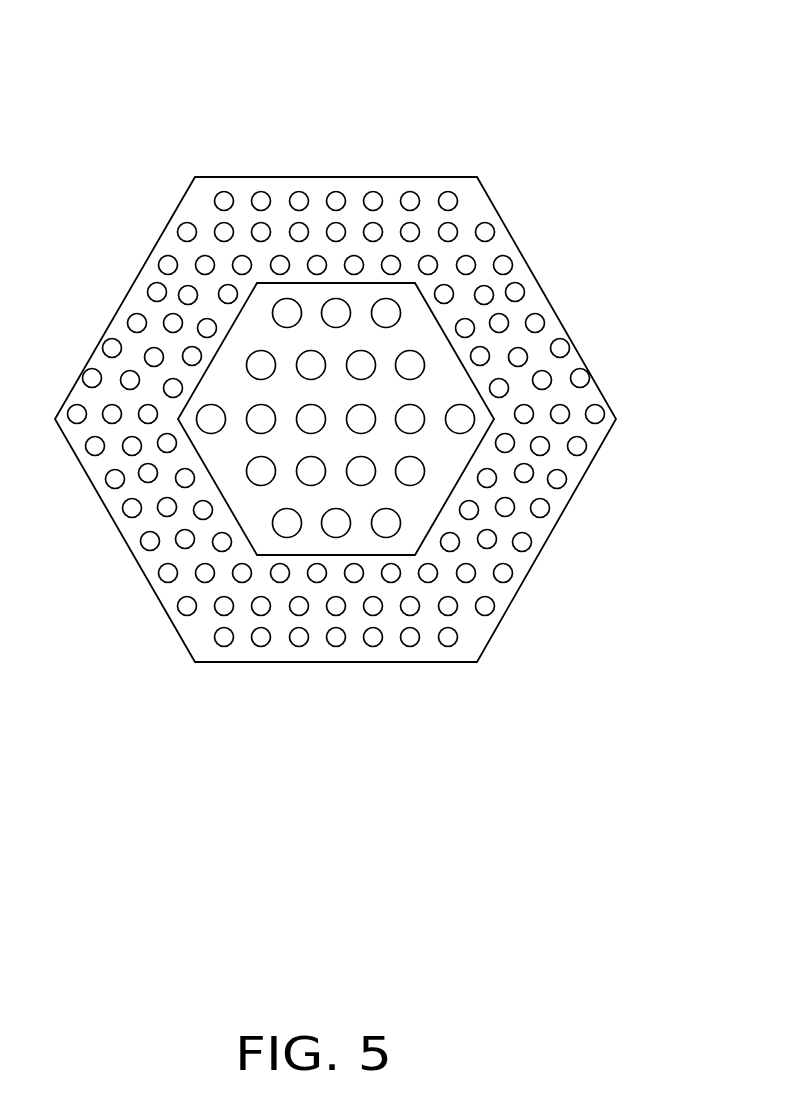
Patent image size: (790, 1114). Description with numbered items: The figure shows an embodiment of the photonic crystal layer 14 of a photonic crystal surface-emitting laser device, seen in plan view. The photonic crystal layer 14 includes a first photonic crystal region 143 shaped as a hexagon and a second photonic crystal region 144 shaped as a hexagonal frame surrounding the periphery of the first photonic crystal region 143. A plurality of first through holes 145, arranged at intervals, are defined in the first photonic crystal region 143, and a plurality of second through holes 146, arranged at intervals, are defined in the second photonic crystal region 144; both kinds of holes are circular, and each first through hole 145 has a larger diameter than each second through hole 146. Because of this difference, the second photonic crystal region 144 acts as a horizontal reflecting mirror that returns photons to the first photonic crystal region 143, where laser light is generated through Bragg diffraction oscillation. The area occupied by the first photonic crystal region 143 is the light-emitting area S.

The photonic crystal layer 14 is at (353, 42).
The first photonic crystal region 143 is at (435, 498).
The second photonic crystal region 144 is at (556, 465).
The first through holes 145 is at (423, 363).
The second through holes 146 is at (532, 540).
The light-emitting area S is at (298, 558).